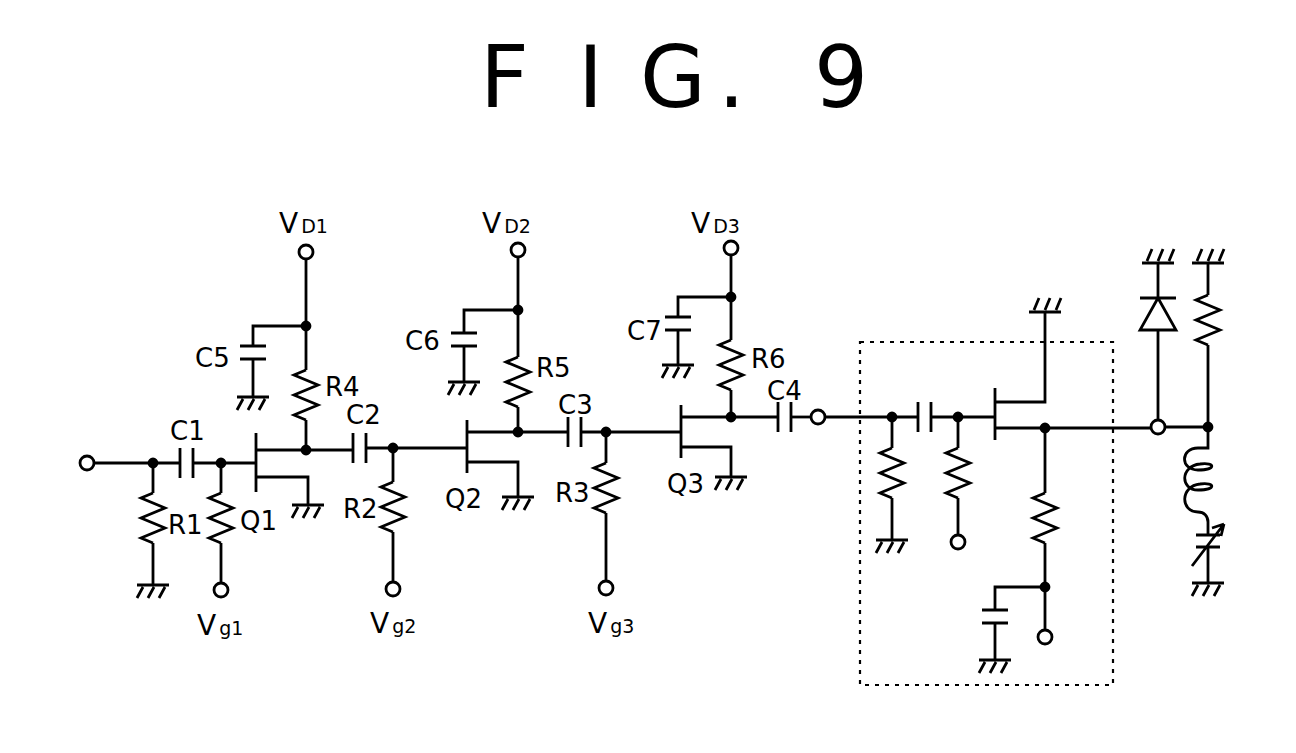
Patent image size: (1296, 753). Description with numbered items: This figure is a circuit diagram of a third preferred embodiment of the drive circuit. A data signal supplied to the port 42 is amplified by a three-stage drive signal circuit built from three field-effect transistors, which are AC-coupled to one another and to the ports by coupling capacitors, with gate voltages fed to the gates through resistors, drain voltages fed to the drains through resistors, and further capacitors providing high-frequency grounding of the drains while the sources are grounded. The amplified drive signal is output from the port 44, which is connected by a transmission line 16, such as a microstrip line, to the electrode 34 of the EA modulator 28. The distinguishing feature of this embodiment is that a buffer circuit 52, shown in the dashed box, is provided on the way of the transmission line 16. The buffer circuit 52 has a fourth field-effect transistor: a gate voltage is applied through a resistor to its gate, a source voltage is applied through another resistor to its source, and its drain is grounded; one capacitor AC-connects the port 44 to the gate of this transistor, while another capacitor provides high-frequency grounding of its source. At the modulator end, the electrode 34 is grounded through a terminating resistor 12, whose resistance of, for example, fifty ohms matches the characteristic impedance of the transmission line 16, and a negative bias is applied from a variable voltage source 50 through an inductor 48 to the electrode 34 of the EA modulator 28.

The port 42 is at (87, 456).
The port 44 is at (822, 410).
The transmission line 16 is at (837, 425).
The buffer circuit 52 is at (860, 637).
The EA modulator 28 is at (1138, 328).
The terminating resistor 12 is at (1226, 320).
The electrode 34 is at (1167, 420).
The inductor 48 is at (1222, 480).
The variable voltage source 50 is at (1186, 545).